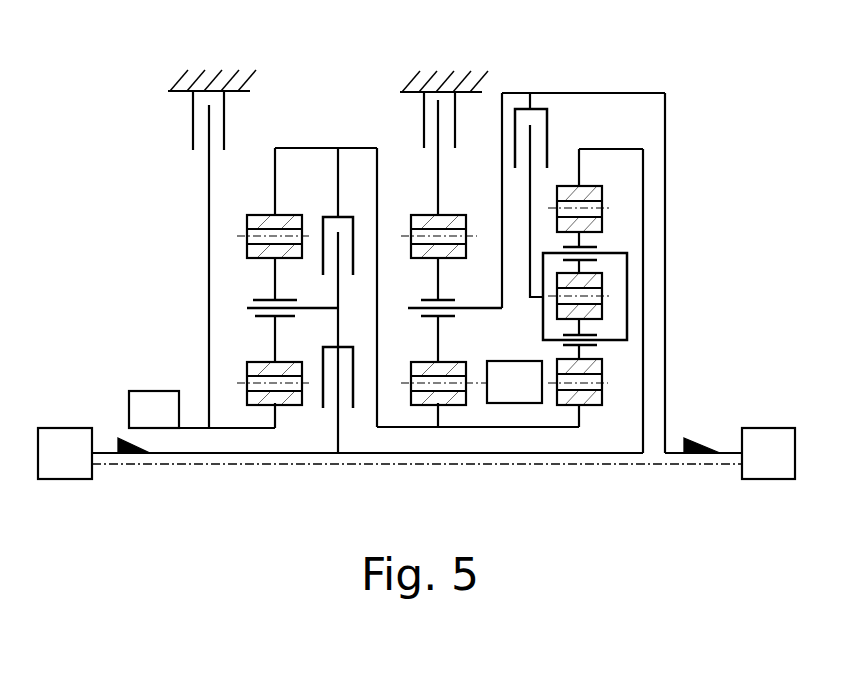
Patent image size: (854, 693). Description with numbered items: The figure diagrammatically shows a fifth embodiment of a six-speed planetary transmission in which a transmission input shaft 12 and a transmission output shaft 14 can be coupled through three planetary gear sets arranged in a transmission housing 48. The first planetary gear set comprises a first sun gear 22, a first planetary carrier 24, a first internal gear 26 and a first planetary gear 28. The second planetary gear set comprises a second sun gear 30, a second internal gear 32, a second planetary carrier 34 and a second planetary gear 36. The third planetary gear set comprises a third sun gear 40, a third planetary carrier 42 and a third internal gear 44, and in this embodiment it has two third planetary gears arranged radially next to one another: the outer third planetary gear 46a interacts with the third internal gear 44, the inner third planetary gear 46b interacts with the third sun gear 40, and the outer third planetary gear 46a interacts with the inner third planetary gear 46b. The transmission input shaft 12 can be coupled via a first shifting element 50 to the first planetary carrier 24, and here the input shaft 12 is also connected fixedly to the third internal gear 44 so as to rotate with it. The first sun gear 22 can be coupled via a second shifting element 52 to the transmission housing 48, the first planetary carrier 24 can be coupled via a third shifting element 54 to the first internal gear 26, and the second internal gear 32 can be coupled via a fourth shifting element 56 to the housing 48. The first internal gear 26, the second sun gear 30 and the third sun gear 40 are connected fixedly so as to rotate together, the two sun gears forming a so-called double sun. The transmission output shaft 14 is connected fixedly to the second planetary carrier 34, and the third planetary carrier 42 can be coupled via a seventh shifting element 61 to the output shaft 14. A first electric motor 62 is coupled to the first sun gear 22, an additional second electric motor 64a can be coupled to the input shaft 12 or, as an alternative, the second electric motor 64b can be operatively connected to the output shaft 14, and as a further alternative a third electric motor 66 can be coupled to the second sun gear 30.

The transmission input shaft 12 is at (128, 455).
The transmission output shaft 14 is at (692, 445).
The first sun gear 22 is at (228, 430).
The first planetary carrier 24 is at (318, 308).
The first internal gear 26 is at (263, 214).
The first planetary gear 28 is at (253, 247).
The second sun gear 30 is at (438, 428).
The second internal gear 32 is at (418, 214).
The second planetary carrier 34 is at (470, 310).
The second planetary gear 36 is at (420, 258).
The third sun gear 40 is at (578, 420).
The third planetary carrier 42 is at (628, 255).
The third internal gear 44 is at (600, 195).
The outer third planetary gear 46a is at (595, 228).
The inner third planetary gear 46b is at (595, 370).
The transmission housing 48 is at (208, 82).
The first shifting element 50 is at (330, 425).
The second shifting element 52 is at (160, 119).
The third shifting element 54 is at (328, 196).
The fourth shifting element 56 is at (402, 105).
The seventh shifting element 61 is at (560, 108).
The first electric motor 62 is at (154, 409).
The second electric motor 64a is at (65, 453).
The second electric motor 64b is at (768, 453).
The third electric motor 66 is at (514, 382).